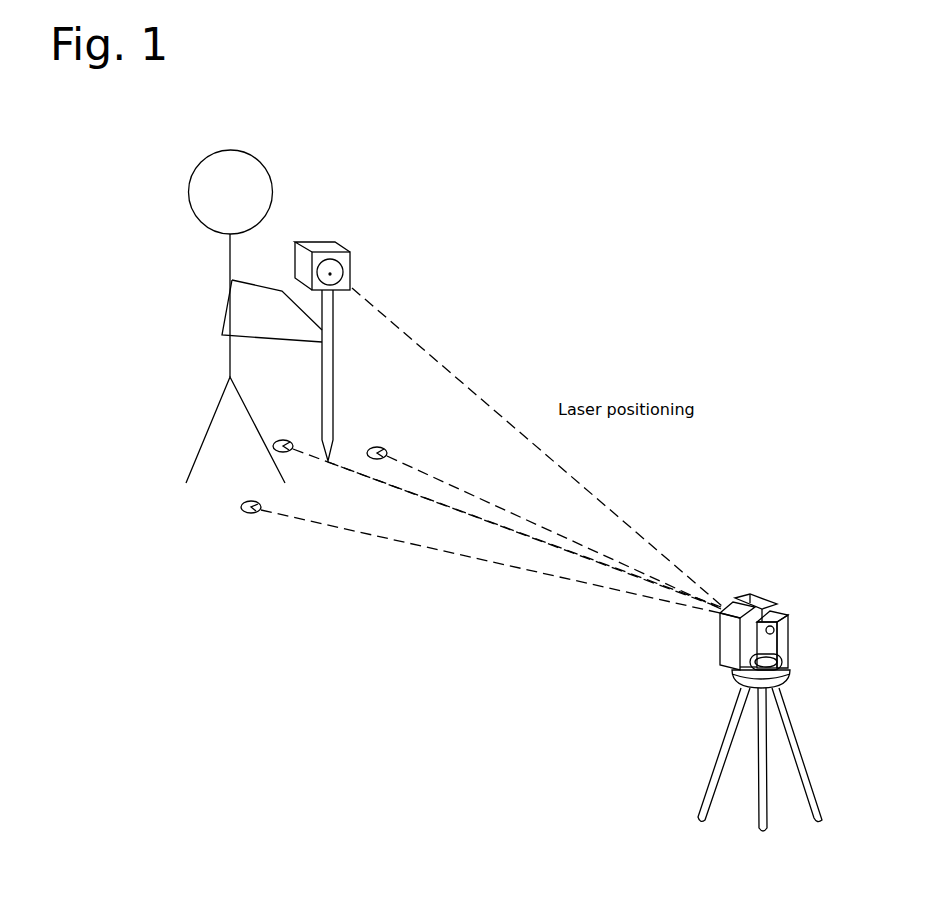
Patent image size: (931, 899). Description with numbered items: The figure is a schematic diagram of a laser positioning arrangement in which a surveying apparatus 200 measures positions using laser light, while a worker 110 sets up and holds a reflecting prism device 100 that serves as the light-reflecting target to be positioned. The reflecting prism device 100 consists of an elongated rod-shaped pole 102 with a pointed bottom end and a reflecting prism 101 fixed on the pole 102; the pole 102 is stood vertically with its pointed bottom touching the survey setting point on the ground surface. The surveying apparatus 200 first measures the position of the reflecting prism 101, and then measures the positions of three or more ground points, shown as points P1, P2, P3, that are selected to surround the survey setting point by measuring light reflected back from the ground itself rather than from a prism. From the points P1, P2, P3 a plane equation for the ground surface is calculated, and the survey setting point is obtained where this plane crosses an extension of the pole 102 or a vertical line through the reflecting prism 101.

The reflecting prism device 100 is at (349, 239).
The reflecting prism 101 is at (345, 270).
The pole 102 is at (334, 374).
The worker 110 is at (226, 258).
The surveying apparatus 200 is at (717, 658).
The point P1 is at (250, 520).
The point P2 is at (283, 434).
The point P3 is at (383, 440).